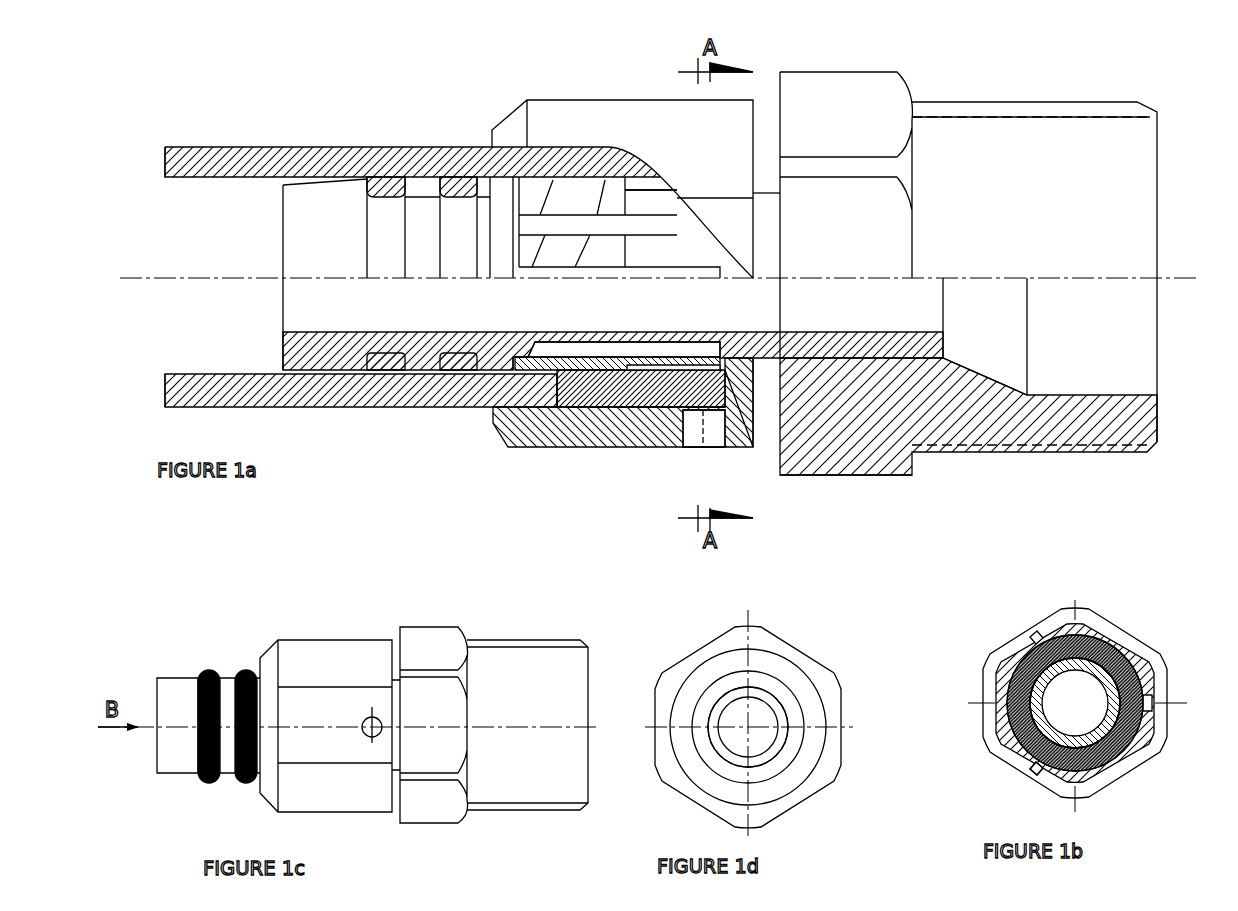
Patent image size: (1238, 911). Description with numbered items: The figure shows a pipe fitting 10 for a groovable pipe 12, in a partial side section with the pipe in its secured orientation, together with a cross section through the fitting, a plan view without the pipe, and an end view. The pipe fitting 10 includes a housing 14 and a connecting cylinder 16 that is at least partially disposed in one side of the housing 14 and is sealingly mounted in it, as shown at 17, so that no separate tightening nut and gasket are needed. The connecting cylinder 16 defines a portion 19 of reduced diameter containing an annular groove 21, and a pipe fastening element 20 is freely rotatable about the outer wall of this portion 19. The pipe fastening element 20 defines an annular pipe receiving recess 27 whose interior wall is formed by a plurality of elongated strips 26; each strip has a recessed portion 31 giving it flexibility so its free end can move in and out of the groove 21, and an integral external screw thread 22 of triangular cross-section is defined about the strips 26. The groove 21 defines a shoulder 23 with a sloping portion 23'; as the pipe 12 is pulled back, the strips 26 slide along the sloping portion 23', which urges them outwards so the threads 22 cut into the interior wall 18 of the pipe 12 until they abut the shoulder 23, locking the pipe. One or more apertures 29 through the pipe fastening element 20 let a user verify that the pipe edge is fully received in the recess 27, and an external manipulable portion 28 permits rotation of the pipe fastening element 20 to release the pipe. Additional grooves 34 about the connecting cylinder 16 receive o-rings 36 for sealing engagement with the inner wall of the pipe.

In FIG. 1A, the pipe fitting 10 is at (840, 488).
In FIG. 1C, the pipe fitting 10 is at (235, 650).
In FIG. 1D, the pipe fitting 10 is at (797, 640).
In FIG. 1B, the pipe fitting 10 is at (1125, 622).
In FIG. 1A, the pipe 12 is at (370, 397).
In FIG. 1B, the pipe 12 is at (1142, 753).
In FIG. 1A, the housing 14 is at (980, 208).
In FIG. 1C, the housing 14 is at (507, 680).
In FIG. 1D, the housing 14 is at (813, 780).
In FIG. 1B, the housing 14 is at (1040, 630).
In FIG. 1A, the connecting cylinder 16 is at (420, 353).
In FIG. 1C, the connecting cylinder 16 is at (173, 755).
In FIG. 1D, the connecting cylinder 16 is at (780, 720).
In FIG. 1B, the connecting cylinder 16 is at (1148, 727).
In FIG. 1A, the sealing mounting 17 is at (873, 358).
In FIG. 1A, the interior wall 18 is at (233, 370).
In FIG. 1A, the portion of reduced diameter 19 is at (763, 190).
In FIG. 1A, the pipe fastening element 20 is at (602, 437).
In FIG. 1D, the pipe fastening element 20 is at (792, 745).
In FIG. 1B, the pipe fastening element 20 is at (1148, 700).
In FIG. 1A, the annular groove 21 is at (507, 398).
In FIG. 1A, the screw thread 22 is at (582, 255).
In FIG. 1D, the screw thread 22 is at (748, 727).
In FIG. 1A, the shoulder 23 is at (497, 333).
In FIG. 1A, the sloping portion 23' is at (617, 326).
In FIG. 1A, the elongated strips 26 is at (522, 245).
In FIG. 1A, the annular pipe receiving recess 27 is at (658, 407).
In FIG. 1A, the external manipulable portion 28 is at (633, 100).
In FIG. 1C, the external manipulable portion 28 is at (378, 793).
In FIG. 1B, the external manipulable portion 28 is at (1138, 668).
In FIG. 1A, the apertures 29 is at (712, 427).
In FIG. 1B, the apertures 29 is at (1037, 770).
In FIG. 1A, the recessed portion 31 is at (753, 447).
In FIG. 1A, the additional grooves 34 is at (403, 177).
In FIG. 1A, the o-rings 36 is at (378, 177).
In FIG. 1C, the o-rings 36 is at (243, 782).